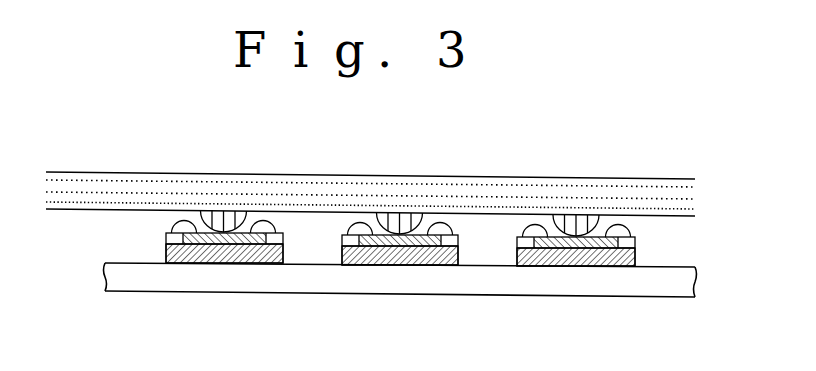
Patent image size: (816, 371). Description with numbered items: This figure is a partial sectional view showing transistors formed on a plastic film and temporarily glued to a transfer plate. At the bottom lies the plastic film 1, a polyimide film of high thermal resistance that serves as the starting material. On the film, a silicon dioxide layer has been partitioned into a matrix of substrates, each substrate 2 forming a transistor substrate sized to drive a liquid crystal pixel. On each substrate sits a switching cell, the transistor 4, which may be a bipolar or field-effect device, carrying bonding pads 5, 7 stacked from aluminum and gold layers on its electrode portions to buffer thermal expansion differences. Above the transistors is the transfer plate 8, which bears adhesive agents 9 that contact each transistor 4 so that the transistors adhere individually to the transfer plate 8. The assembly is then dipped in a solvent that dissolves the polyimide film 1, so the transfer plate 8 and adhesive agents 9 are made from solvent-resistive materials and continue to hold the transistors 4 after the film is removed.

The plastic film 1 is at (147, 278).
The substrate 2 is at (197, 263).
The transistor 4 is at (410, 265).
The bonding pad 5 is at (532, 229).
The bonding pad 7 is at (620, 232).
The transfer plate 8 is at (158, 190).
The adhesive agents 9 is at (228, 218).